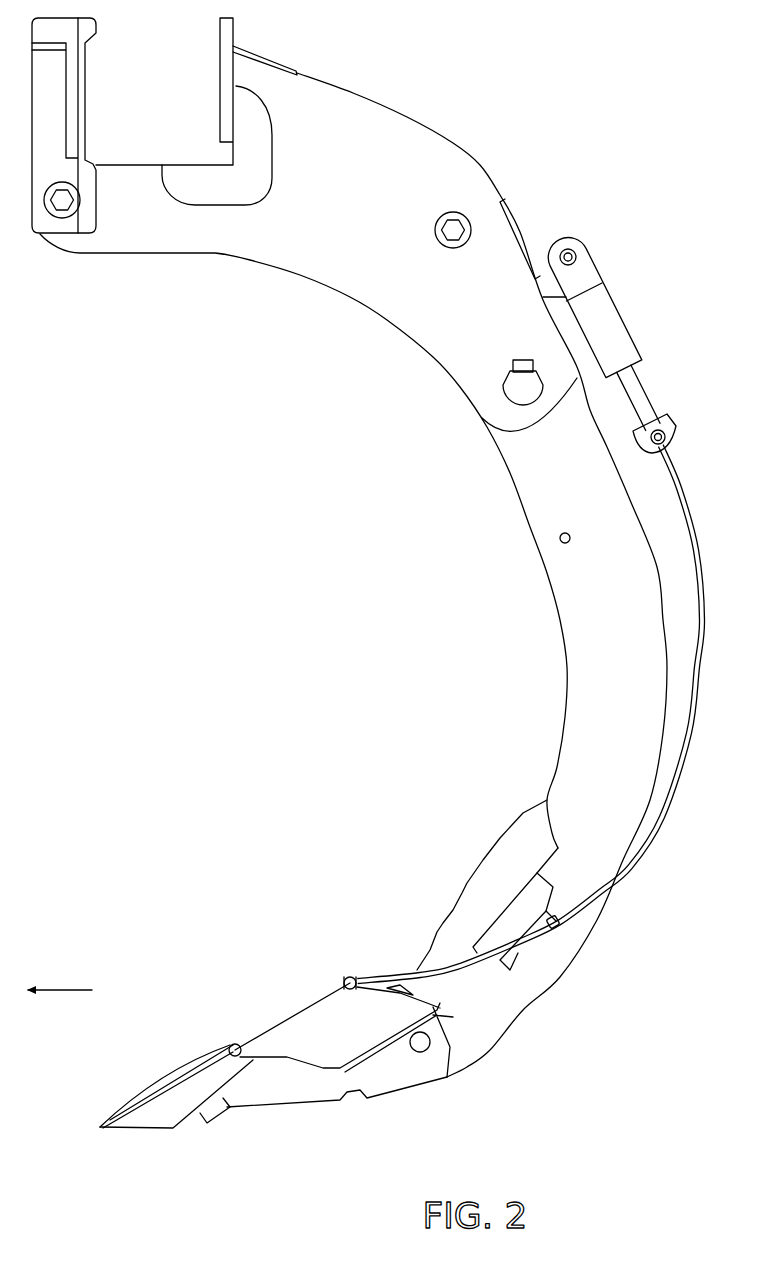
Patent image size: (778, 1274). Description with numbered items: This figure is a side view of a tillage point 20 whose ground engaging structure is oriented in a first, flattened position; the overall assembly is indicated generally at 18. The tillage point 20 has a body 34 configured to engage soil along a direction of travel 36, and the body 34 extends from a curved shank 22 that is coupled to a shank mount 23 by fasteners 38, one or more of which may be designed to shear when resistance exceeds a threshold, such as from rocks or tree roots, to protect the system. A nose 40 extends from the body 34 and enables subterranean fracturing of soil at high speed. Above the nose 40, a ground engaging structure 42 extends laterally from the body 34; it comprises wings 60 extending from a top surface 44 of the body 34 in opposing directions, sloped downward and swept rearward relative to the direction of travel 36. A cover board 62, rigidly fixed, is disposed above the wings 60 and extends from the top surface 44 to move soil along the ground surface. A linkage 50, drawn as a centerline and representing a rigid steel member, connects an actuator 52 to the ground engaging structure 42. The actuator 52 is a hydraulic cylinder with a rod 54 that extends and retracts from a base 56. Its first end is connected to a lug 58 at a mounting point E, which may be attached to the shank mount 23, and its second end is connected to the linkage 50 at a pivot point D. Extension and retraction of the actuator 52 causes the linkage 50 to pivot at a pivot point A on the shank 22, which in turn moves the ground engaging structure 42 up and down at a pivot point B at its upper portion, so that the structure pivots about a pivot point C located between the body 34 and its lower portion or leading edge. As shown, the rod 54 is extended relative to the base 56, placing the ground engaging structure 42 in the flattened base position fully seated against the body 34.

The shank assembly 18 is at (662, 113).
The tillage point 20 is at (241, 1008).
The shank 22 is at (580, 690).
The shank mount 23 is at (461, 142).
The body 34 is at (283, 1092).
The direction of travel 36 is at (63, 988).
The fasteners 38 is at (452, 232).
The nose 40 is at (106, 1108).
The ground engaging structure 42 is at (280, 987).
The top surface 44 is at (563, 738).
The linkage 50 is at (558, 714).
The actuator 52 is at (651, 317).
The rod 54 is at (650, 386).
The base 56 is at (603, 317).
The lug 58 is at (611, 230).
The wings 60 is at (307, 1035).
The cover board 62 is at (446, 907).
The pivot point A is at (561, 929).
The pivot point B is at (349, 975).
The pivot point C is at (226, 1046).
The pivot point D is at (670, 441).
The mounting point E is at (578, 254).